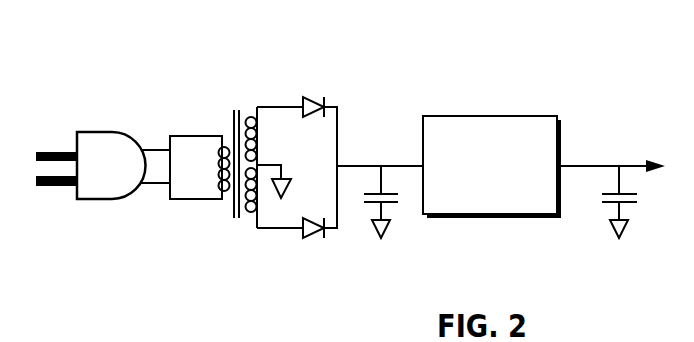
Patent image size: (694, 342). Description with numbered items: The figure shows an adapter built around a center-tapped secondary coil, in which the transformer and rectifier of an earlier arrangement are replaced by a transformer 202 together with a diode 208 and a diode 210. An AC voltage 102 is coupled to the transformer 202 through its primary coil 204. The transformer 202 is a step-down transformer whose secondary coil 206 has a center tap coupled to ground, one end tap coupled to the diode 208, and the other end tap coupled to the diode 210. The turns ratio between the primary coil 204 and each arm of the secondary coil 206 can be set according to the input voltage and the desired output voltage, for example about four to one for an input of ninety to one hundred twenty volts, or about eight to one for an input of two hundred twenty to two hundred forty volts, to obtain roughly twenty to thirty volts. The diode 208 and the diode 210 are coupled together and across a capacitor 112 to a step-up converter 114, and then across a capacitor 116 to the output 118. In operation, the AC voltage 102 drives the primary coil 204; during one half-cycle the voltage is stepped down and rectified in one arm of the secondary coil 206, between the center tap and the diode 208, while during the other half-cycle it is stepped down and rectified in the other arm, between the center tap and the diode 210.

The AC voltage 102 is at (92, 208).
The transformer 202 is at (177, 159).
The primary coil 204 is at (213, 127).
The secondary coil 206 is at (224, 248).
The diode 208 is at (305, 83).
The diode 210 is at (307, 253).
The capacitor 112 is at (423, 242).
The step-up converter 114 is at (492, 167).
The capacitor 116 is at (602, 212).
The output 118 is at (655, 146).